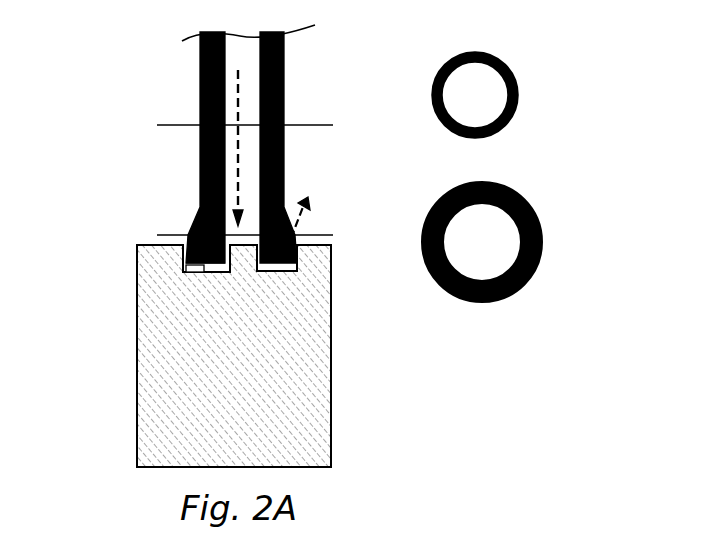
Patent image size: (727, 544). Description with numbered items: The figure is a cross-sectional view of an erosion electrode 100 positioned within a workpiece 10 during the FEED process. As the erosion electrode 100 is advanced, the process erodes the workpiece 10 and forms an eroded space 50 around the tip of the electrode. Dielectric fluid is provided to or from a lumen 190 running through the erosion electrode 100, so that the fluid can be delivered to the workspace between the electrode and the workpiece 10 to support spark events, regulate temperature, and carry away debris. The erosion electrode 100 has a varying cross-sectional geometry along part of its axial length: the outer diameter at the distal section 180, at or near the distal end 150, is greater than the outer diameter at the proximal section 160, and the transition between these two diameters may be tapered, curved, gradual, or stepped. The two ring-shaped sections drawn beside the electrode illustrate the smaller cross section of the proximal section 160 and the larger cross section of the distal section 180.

The workpiece 10 is at (160, 402).
The eroded space 50 is at (190, 272).
The erosion electrode 100 is at (197, 50).
The distal end 150 is at (185, 263).
The proximal section 160 is at (172, 125).
The distal section 180 is at (172, 235).
The lumen 190 is at (230, 168).